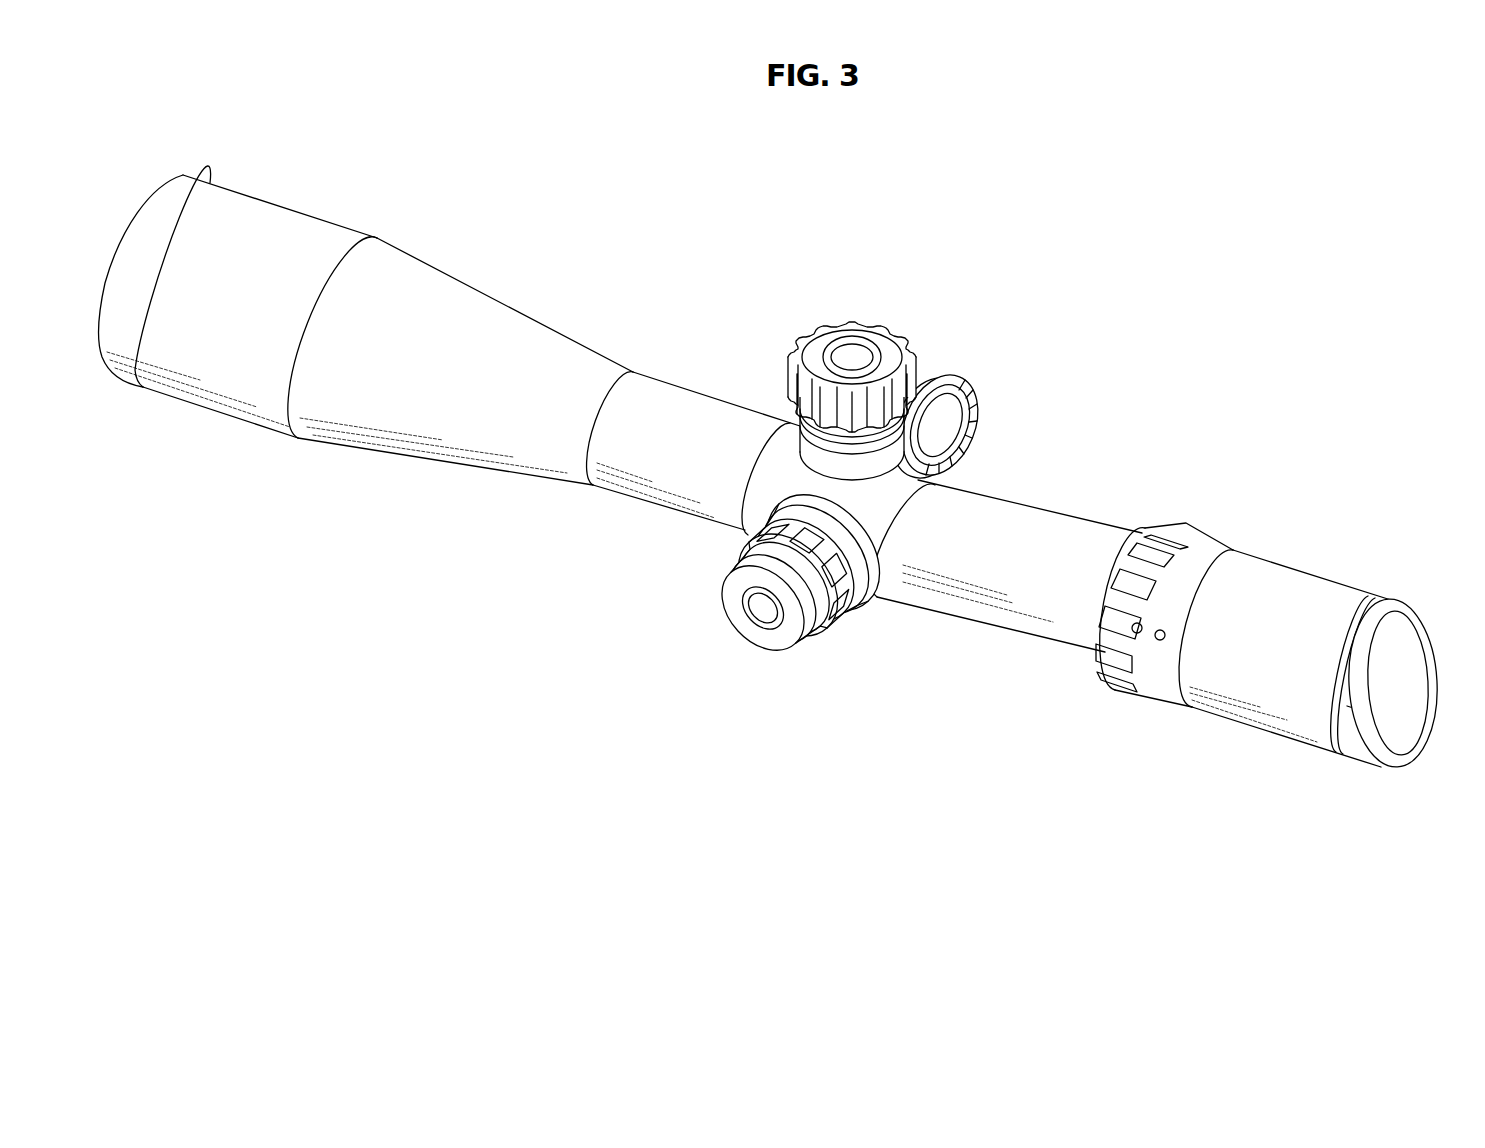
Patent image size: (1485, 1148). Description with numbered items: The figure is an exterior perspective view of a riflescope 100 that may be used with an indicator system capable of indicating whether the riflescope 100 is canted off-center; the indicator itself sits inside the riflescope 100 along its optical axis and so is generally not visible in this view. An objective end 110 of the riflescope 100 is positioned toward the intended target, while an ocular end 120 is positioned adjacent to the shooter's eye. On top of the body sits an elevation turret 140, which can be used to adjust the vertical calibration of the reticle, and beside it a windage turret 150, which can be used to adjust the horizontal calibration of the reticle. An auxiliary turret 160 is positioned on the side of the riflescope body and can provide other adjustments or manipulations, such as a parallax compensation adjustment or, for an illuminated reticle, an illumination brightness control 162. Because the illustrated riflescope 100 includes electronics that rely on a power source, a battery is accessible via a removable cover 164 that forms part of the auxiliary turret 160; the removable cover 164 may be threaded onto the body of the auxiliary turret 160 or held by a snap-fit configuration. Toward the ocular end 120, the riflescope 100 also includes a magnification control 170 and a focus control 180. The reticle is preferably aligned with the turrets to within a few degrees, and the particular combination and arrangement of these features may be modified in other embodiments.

The riflescope 100 is at (1075, 162).
The objective end 110 is at (200, 525).
The ocular end 120 is at (1365, 800).
The elevation turret 140 is at (883, 327).
The windage turret 150 is at (963, 382).
The auxiliary turret 160 is at (758, 652).
The illumination brightness control 162 is at (845, 615).
The removable cover 164 is at (733, 600).
The magnification control 170 is at (1200, 535).
The focus control 180 is at (1350, 738).